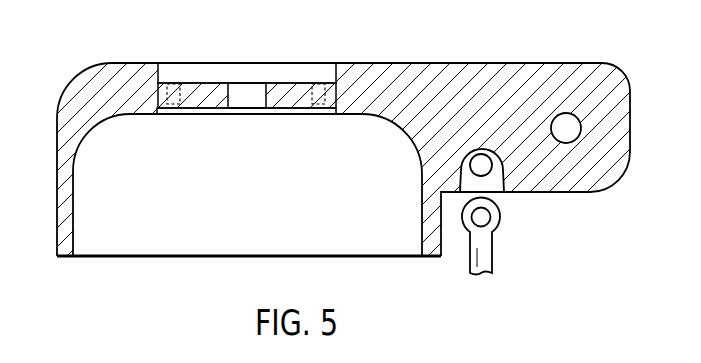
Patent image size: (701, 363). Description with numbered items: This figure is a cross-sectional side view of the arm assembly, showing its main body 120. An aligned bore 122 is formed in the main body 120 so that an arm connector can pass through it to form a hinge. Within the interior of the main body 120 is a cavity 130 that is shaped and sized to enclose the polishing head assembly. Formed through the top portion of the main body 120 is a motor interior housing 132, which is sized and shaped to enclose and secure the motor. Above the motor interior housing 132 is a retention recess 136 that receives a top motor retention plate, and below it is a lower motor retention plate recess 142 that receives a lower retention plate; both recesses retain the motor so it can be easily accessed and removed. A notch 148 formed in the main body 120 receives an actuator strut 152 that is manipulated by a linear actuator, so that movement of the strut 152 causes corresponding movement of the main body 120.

The main body 120 is at (110, 68).
The aligned bore 122 is at (568, 118).
The cavity 130 is at (135, 242).
The motor interior housing 132 is at (240, 90).
The retention recess 136 is at (320, 70).
The lower motor retention plate recess 142 is at (218, 115).
The notch 148 is at (488, 180).
The actuator strut 152 is at (475, 260).